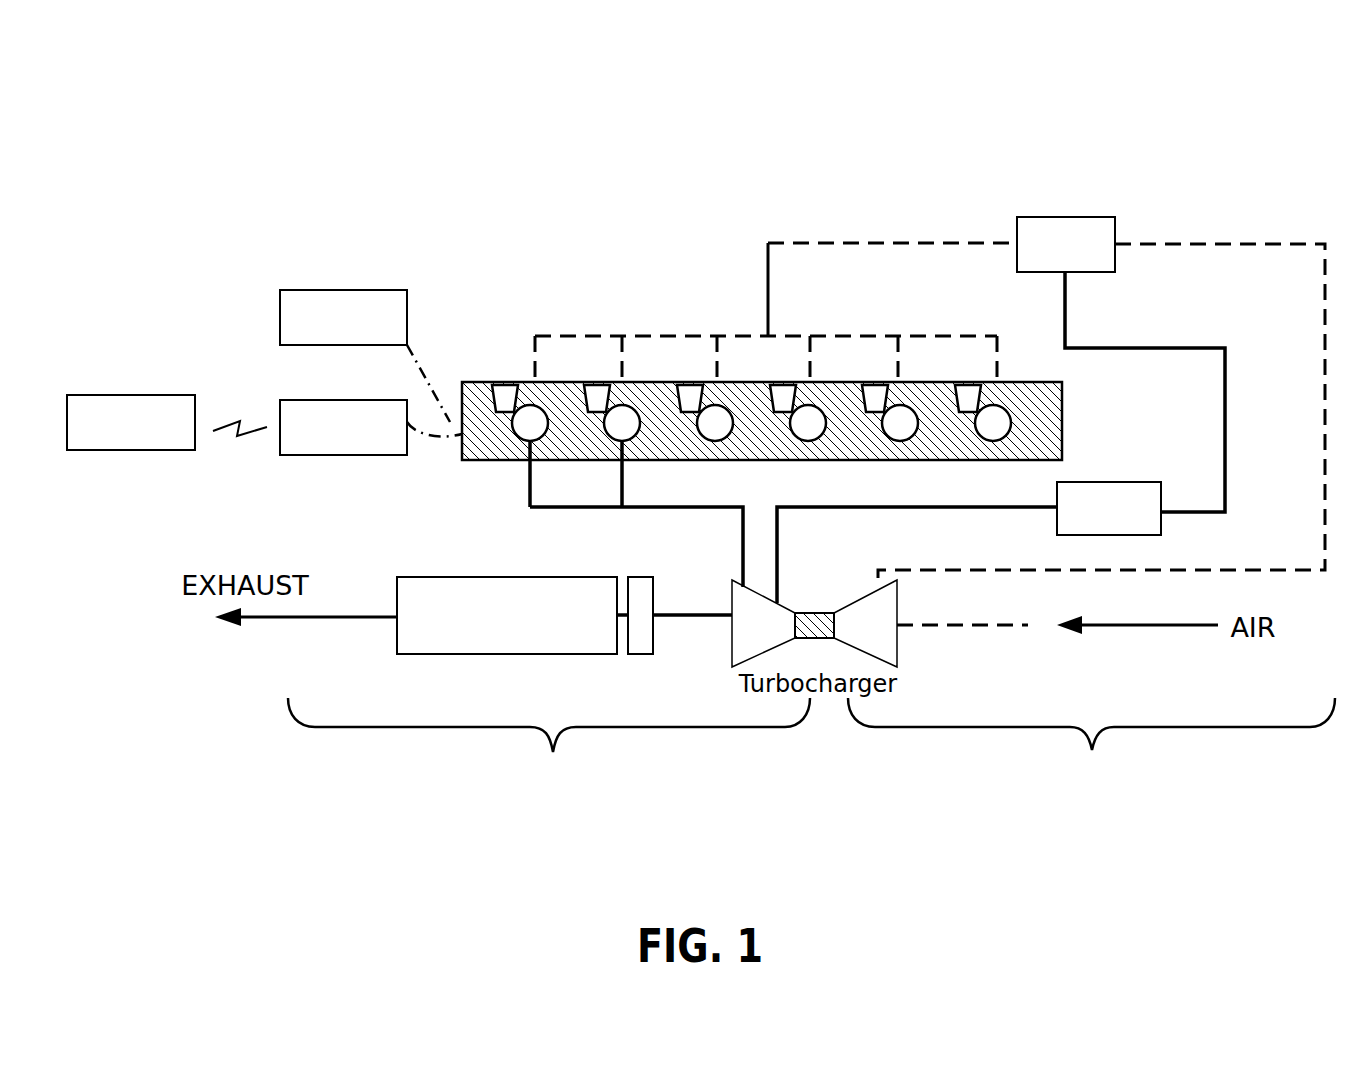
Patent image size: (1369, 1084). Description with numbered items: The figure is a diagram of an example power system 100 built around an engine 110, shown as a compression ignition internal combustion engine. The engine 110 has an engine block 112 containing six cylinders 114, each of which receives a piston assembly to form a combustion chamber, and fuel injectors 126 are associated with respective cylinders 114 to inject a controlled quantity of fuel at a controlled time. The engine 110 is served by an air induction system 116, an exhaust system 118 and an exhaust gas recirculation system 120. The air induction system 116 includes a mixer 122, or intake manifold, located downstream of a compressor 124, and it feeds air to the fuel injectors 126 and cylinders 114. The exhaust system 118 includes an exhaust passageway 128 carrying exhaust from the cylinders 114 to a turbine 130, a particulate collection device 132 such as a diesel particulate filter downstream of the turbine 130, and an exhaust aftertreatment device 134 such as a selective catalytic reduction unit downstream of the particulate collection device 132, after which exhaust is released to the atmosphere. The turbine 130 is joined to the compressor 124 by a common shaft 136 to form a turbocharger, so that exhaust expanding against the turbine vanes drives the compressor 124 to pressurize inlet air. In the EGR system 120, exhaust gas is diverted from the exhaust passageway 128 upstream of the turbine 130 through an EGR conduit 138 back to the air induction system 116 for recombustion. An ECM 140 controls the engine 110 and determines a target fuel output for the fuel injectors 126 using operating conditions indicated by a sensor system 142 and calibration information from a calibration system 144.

The power system 100 is at (258, 64).
The engine 110 is at (460, 208).
The engine block 112 is at (462, 382).
The cylinders 114 is at (693, 415).
The air induction system 116 is at (1091, 743).
The exhaust system 118 is at (549, 743).
The exhaust gas recirculation (EGR) system 120 is at (1125, 482).
The mixer 122 is at (1078, 217).
The compressor 124 is at (897, 645).
The fuel injectors 126 is at (862, 383).
The exhaust passageway 128 is at (740, 551).
The turbine 130 is at (735, 645).
The particulate collection device 132 is at (645, 652).
The exhaust aftertreatment device 134 is at (443, 577).
The common shaft 136 is at (820, 613).
The EGR conduit 138 is at (1030, 510).
The ECM 140 is at (371, 427).
The sensor system 142 is at (365, 356).
The calibration system 144 is at (167, 422).